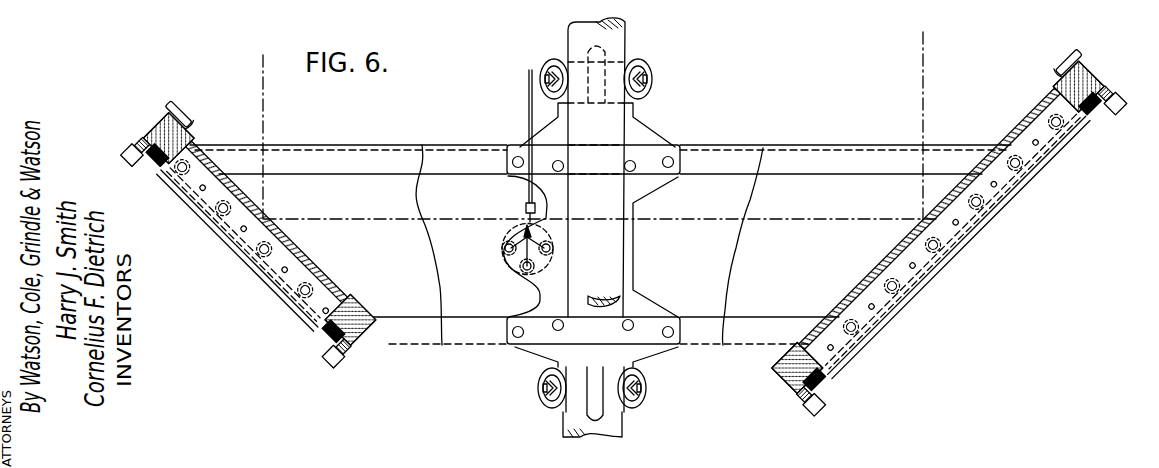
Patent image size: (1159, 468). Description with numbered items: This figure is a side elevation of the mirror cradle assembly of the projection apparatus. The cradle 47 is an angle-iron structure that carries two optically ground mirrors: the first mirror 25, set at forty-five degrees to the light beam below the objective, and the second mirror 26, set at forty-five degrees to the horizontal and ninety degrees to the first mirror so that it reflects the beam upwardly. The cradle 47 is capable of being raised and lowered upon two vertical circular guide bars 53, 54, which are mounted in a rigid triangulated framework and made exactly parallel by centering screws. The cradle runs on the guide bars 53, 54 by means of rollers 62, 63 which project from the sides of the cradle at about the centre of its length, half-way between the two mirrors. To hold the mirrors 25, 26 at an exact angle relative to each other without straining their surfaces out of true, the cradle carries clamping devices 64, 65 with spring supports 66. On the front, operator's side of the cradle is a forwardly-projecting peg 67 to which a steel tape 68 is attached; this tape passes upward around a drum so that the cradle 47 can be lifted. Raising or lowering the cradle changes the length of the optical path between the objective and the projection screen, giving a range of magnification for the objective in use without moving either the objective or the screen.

The first mirror 25 is at (195, 150).
The second mirror 26 is at (1033, 112).
The cradle 47 is at (443, 147).
The guide bar 53 is at (614, 430).
The guide bar 54 is at (612, 43).
The roller 62 is at (553, 413).
The roller 63 is at (553, 62).
The clamping device 64 is at (176, 104).
The clamping device 65 is at (368, 312).
The spring support 66 is at (168, 166).
The forwardly-projecting peg 67 is at (513, 265).
The steel tape 68 is at (527, 112).